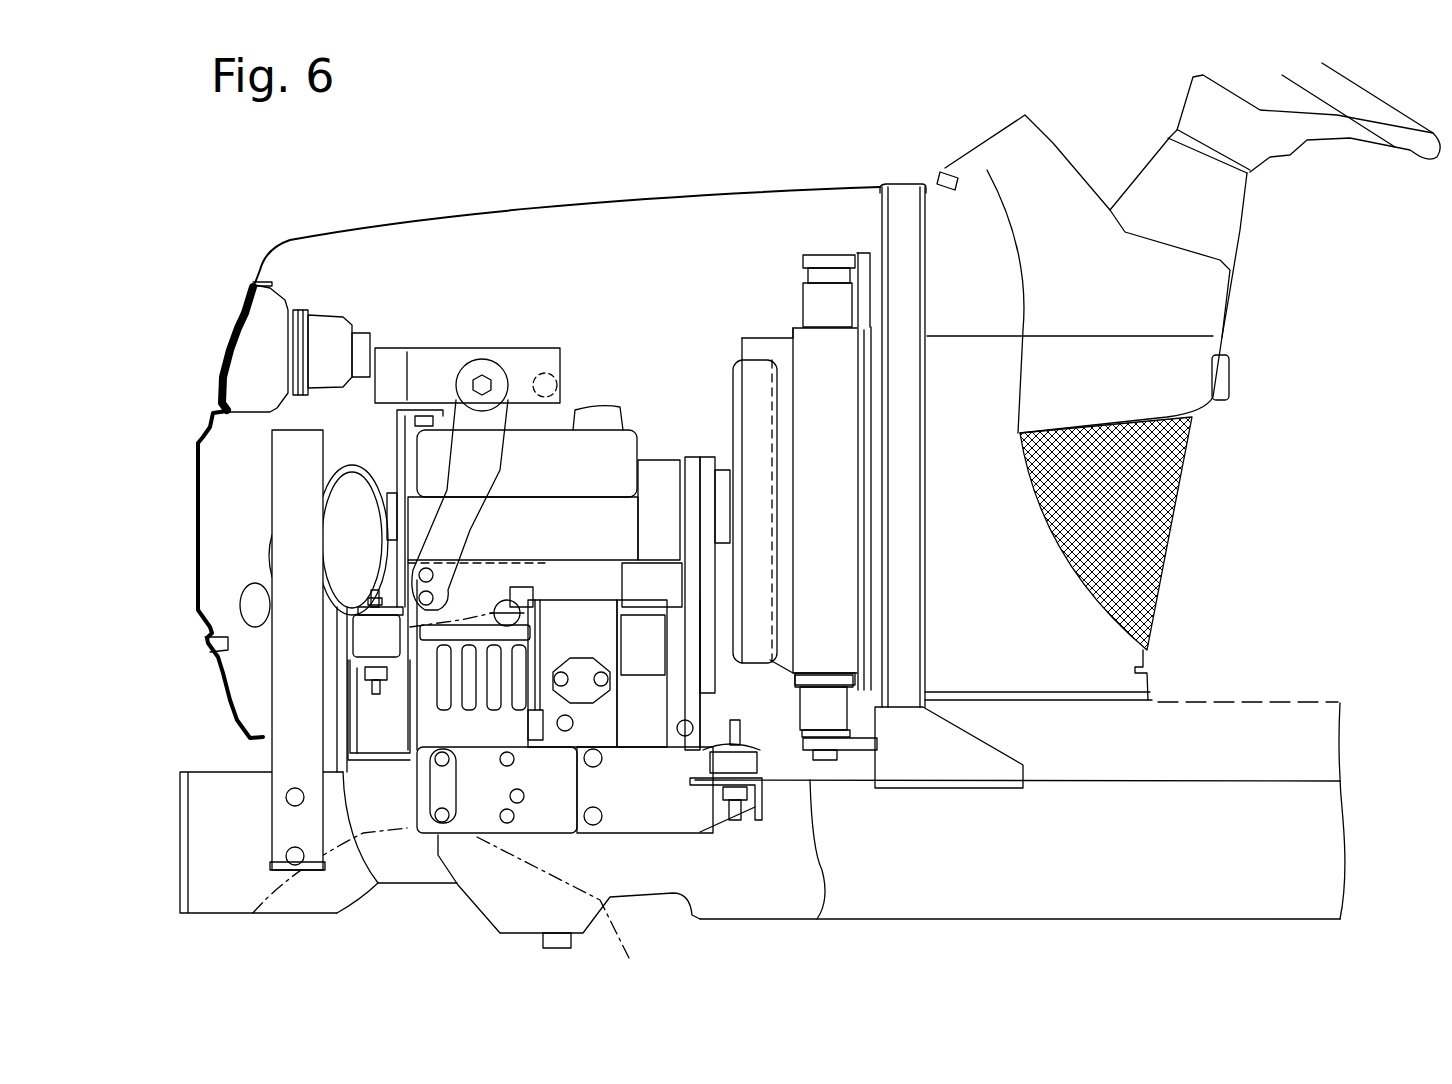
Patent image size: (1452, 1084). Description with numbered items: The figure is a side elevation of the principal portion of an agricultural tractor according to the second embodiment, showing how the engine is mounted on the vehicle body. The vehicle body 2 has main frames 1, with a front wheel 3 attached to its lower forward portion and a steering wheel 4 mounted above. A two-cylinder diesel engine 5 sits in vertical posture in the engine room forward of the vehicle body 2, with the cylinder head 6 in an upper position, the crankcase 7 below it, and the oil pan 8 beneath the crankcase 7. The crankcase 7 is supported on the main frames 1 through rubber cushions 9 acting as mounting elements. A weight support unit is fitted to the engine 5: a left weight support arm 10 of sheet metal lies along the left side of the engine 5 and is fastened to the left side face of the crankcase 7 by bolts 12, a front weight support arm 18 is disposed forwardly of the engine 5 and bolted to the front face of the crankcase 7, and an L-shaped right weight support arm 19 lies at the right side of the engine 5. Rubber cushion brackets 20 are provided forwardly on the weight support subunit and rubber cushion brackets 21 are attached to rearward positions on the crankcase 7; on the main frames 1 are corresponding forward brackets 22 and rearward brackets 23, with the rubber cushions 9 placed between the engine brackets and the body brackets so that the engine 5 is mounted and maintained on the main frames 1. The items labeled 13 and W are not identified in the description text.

The main frames 1 is at (1342, 846).
The vehicle body 2 is at (180, 767).
The front wheels 3 is at (240, 940).
The steering wheel 4 is at (1417, 150).
The engine 5 is at (655, 380).
The cylinder head 6 is at (410, 518).
The crankcase 7 is at (463, 663).
The oil pan 8 is at (483, 895).
The rubber cushions 9 is at (363, 643).
The left weight support arm 10 is at (510, 358).
The bolts 12 is at (453, 563).
The pivot bolt 13 is at (470, 377).
The front weight support arm 18 is at (395, 470).
The right weight support arm 19 is at (567, 403).
The rubber cushion brackets 20 is at (367, 610).
The rubber cushion brackets 21 is at (677, 773).
The forward brackets 22 is at (363, 708).
The rearward brackets 23 is at (762, 803).
The width W is at (478, 345).